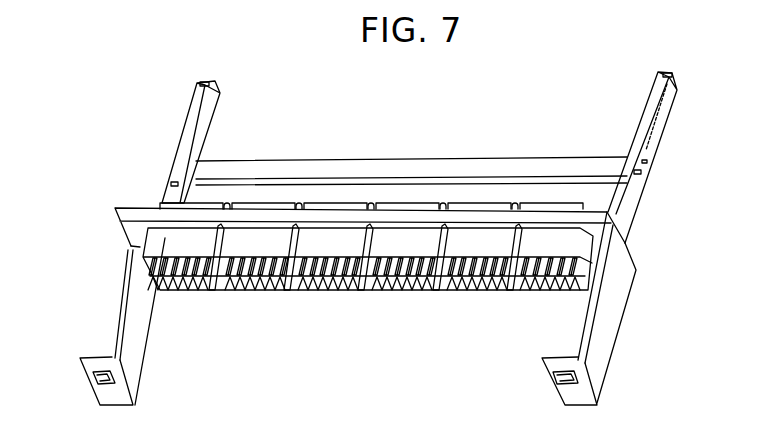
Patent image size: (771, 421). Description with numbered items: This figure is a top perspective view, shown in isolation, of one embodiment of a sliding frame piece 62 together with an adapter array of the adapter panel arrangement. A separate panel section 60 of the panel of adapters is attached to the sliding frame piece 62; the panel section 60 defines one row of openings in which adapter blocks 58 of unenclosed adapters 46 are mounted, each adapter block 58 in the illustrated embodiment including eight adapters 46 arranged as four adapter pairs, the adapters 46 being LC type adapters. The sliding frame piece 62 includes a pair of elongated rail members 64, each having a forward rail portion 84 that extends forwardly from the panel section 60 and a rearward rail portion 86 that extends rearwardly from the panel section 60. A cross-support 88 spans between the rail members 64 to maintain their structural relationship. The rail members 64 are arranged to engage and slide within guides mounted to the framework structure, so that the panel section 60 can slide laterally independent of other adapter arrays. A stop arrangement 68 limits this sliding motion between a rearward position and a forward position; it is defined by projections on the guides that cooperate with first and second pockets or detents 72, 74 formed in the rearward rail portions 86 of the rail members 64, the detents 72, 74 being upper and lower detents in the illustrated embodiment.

The adapters 46 is at (478, 258).
The adapter block 58 is at (322, 240).
The panel section 60 is at (600, 233).
The sliding frame piece 62 is at (118, 187).
The elongated rail members 64 is at (630, 198).
The stop arrangement 68 is at (168, 168).
The first pocket or detent 72 is at (635, 173).
The second pocket or detent 74 is at (670, 75).
The forward rail portion 84 is at (118, 320).
The rearward rail portion 86 is at (197, 112).
The cross-support 88 is at (400, 167).